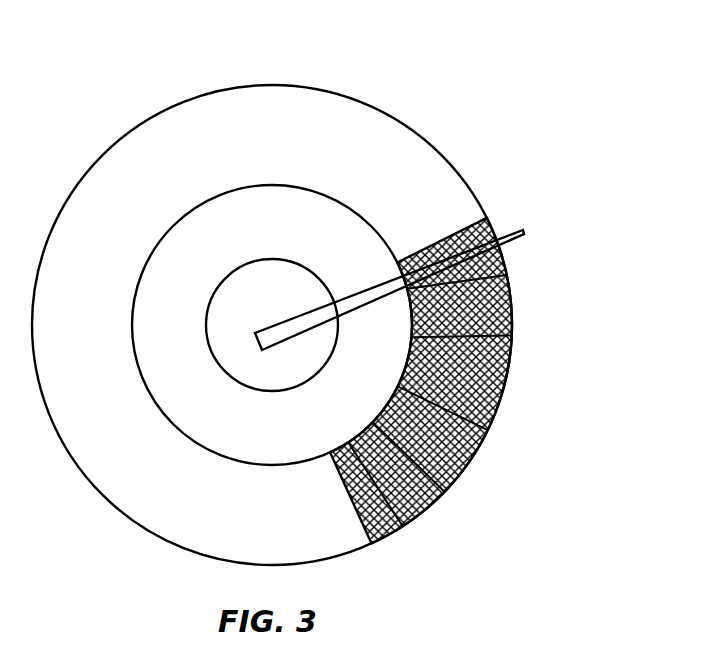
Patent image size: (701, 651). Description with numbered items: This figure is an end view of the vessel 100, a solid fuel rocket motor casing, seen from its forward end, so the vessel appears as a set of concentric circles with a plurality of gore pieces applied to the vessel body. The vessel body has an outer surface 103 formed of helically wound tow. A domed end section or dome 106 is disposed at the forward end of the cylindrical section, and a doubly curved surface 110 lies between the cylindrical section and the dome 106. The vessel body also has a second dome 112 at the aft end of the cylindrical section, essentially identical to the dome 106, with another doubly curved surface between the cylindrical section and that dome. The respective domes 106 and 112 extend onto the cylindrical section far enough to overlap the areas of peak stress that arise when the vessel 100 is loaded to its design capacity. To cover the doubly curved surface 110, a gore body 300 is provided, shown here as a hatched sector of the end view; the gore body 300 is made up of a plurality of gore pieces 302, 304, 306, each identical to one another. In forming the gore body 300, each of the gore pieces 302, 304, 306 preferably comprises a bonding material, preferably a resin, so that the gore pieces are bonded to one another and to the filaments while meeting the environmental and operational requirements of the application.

The vessel 100 is at (444, 151).
The outer surface 103 is at (232, 157).
The dome 106 is at (200, 252).
The doubly curved surface 110 is at (333, 90).
The dome 112 is at (367, 130).
The gore body 300 is at (476, 399).
The gore piece 302 is at (484, 437).
The gore piece 304 is at (446, 492).
The gore piece 306 is at (398, 530).